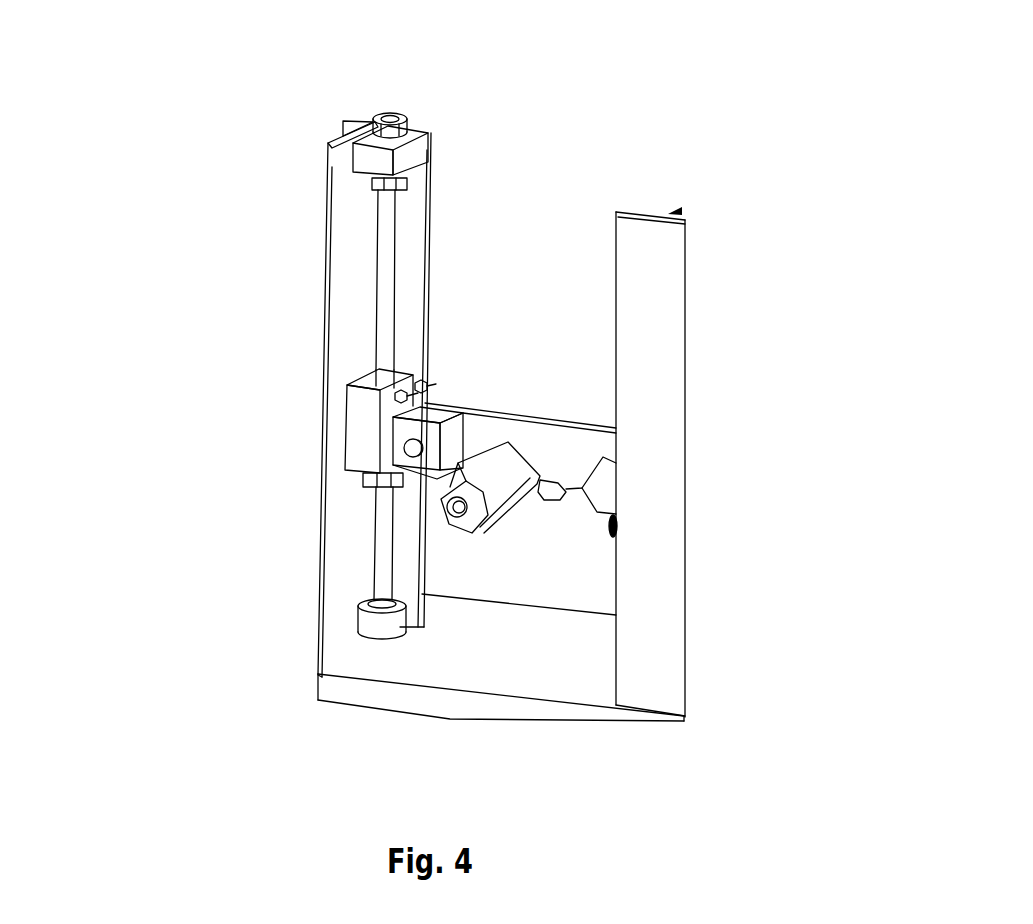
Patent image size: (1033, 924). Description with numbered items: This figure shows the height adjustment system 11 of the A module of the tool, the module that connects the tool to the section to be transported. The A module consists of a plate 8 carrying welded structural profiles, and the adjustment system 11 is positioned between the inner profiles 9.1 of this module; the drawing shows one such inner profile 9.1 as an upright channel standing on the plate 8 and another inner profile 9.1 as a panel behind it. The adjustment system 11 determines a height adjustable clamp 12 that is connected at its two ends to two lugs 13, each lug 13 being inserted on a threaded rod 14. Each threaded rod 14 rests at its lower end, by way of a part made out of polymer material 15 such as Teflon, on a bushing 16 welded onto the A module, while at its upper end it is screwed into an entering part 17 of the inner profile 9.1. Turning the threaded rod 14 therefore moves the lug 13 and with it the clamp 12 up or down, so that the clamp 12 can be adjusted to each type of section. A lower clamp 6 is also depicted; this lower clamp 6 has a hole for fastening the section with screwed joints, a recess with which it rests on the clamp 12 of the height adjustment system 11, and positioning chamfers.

The lower clamp 6 is at (510, 484).
The plate 8 is at (513, 660).
The inner profile 9.1 is at (338, 245).
The adjustment system 11 is at (722, 436).
The clamp 12 is at (560, 443).
The lug 13 is at (363, 428).
The threaded rod 14 is at (380, 528).
The part made out of polymer material 15 is at (358, 602).
The bushing 16 is at (380, 622).
The entering part 17 is at (410, 158).